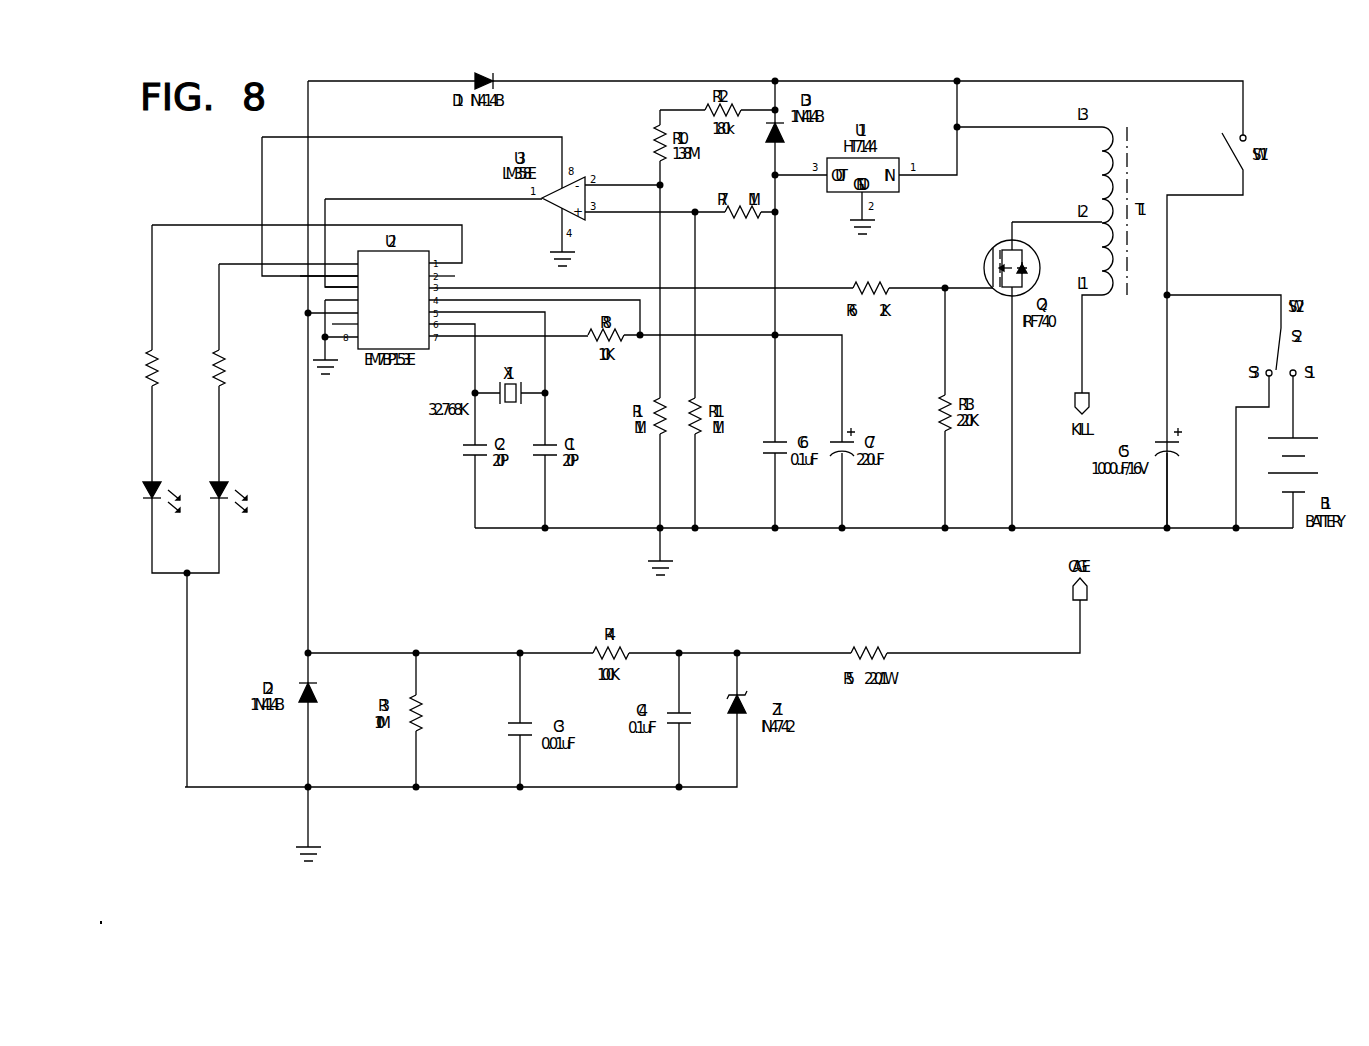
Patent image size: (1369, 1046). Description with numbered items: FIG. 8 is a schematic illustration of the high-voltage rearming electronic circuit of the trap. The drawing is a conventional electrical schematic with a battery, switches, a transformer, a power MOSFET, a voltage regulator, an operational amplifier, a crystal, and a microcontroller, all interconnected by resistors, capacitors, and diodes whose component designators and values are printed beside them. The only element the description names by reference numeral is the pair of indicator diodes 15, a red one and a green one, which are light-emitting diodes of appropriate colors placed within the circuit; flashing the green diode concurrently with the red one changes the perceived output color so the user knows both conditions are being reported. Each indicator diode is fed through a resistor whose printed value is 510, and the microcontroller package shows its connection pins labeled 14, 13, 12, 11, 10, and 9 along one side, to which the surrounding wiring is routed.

The diodes 15 is at (217, 478).
The LED current-limiting resistors R2 and R9 510 is at (201, 416).
The microcontroller U2 pin 14 is at (288, 264).
The microcontroller U2 pin 13 is at (329, 277).
The microcontroller U2 pin 12 is at (341, 288).
The microcontroller U2 pin 11 is at (341, 301).
The microcontroller U2 pin 10 is at (333, 314).
The microcontroller U2 pin 9 is at (345, 325).